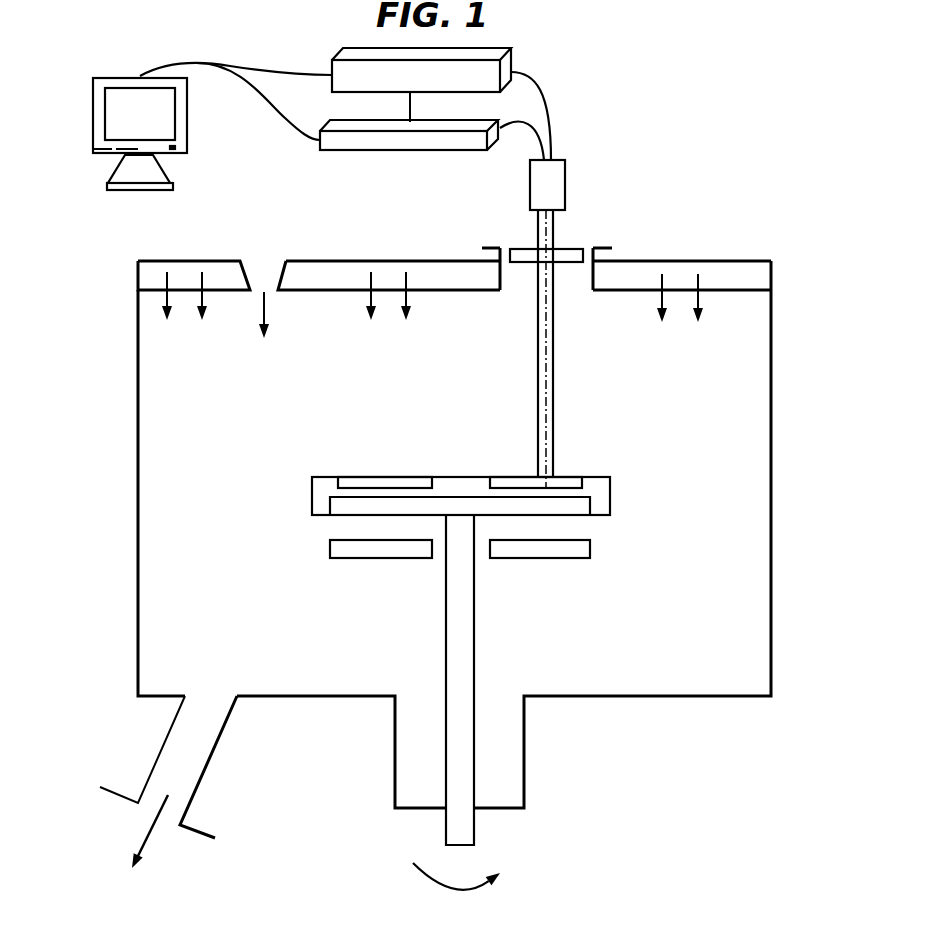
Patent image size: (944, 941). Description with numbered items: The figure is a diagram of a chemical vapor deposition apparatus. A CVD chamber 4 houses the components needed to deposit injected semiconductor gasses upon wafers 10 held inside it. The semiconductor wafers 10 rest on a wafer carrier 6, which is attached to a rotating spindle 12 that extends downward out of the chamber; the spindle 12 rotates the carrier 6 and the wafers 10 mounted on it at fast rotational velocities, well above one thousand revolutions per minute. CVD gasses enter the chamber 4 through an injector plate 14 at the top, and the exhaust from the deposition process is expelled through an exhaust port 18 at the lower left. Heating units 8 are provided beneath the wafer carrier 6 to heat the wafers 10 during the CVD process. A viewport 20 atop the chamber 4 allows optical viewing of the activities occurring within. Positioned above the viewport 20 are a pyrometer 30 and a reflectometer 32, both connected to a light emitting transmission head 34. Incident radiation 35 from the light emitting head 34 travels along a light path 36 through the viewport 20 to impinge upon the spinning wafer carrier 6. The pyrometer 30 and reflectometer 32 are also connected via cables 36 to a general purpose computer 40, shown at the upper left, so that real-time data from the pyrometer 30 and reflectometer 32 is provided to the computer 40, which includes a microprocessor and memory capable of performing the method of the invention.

The CVD chamber 4 is at (771, 420).
The wafer carrier 6 is at (313, 513).
The heating units 8 is at (367, 559).
The wafers 10 is at (497, 477).
The rotating spindle 12 is at (474, 823).
The injector plate 14 is at (263, 256).
The exhaust port 18 is at (140, 843).
The viewport 20 is at (567, 248).
The pyrometer 30 is at (397, 151).
The reflectometer 32 is at (511, 68).
The light emitting transmission head 34 is at (565, 188).
The incident radiation 35 is at (414, 106).
The light path 36 is at (172, 65).
The general purpose computer 40 is at (93, 118).